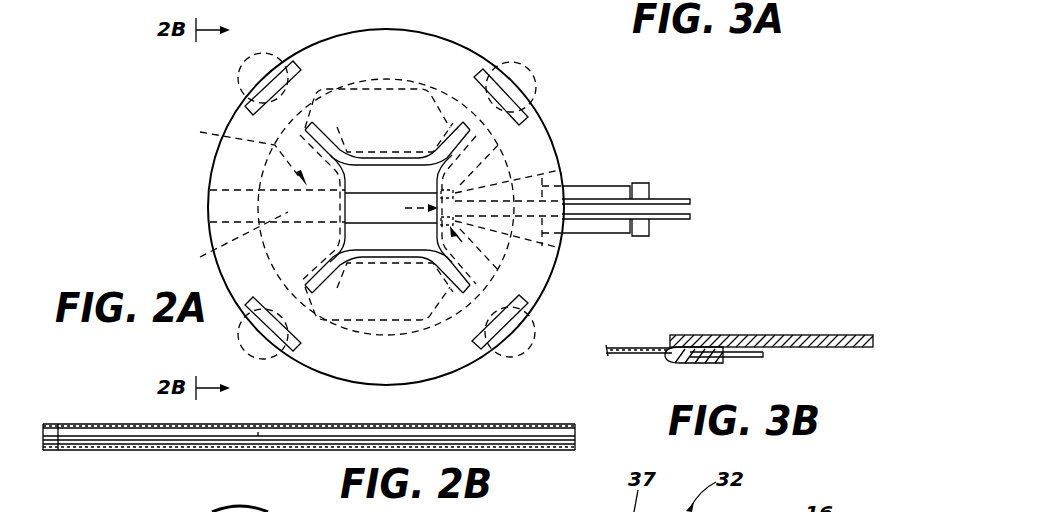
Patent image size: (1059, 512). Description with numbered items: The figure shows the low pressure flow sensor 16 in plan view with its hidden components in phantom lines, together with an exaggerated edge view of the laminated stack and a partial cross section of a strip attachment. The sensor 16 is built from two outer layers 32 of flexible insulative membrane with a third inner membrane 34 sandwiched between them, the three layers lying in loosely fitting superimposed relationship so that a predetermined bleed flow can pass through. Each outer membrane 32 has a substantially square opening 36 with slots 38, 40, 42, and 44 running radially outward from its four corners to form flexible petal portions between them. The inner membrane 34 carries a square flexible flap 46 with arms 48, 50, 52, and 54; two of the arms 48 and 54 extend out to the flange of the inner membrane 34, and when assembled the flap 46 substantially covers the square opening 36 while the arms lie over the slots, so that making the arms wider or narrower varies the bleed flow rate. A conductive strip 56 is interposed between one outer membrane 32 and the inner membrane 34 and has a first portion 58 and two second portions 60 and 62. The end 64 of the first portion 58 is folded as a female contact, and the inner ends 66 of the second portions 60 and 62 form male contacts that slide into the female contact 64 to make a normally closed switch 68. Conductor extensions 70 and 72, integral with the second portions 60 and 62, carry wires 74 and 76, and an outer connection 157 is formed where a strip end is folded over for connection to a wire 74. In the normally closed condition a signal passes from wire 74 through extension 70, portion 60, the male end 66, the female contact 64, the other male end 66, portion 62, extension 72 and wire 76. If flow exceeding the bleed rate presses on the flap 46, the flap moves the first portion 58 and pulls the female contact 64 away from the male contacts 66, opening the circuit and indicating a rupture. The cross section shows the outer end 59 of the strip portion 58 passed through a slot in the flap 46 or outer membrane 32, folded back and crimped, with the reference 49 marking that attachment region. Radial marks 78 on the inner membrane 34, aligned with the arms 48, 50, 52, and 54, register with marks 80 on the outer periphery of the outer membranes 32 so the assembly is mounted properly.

In FIG. 2A, the sensor 16 is at (586, 84).
In FIG. 2A, the outer membrane layers 32 is at (419, 24).
In FIG. 2B, the outer membrane layers 32 is at (117, 416).
In FIG. 2A, the inner membrane 34 is at (409, 100).
In FIG. 2B, the inner membrane 34 is at (126, 450).
In FIG. 2A, the square opening 36 is at (373, 262).
In FIG. 2A, the slot 38 is at (364, 177).
In FIG. 2A, the slot 40 is at (414, 177).
In FIG. 2A, the slot 42 is at (406, 237).
In FIG. 2A, the slot 44 is at (361, 237).
In FIG. 2A, the square flexible flap 46 is at (387, 162).
In FIG. 3B, the square flexible flap 46 is at (648, 345).
In FIG. 2A, the arm 48 is at (336, 145).
In FIG. 3B, the connection 49 is at (680, 345).
In FIG. 2A, the arm 50 is at (439, 135).
In FIG. 2A, the arm 52 is at (441, 293).
In FIG. 2A, the arm 54 is at (306, 270).
In FIG. 2A, the conductive strip 56 is at (341, 207).
In FIG. 2A, the first portion 58 is at (255, 228).
In FIG. 2B, the first portion 58 is at (290, 440).
In FIG. 3B, the first portion 58 is at (800, 335).
In FIG. 3B, the outer end 59 is at (700, 365).
In FIG. 2A, the second portion 60 is at (556, 152).
In FIG. 2A, the second portion 62 is at (557, 262).
In FIG. 2A, the female contact 64 is at (391, 208).
In FIG. 2A, the male contacts 66 is at (500, 207).
In FIG. 2A, the normally closed switch 68 is at (497, 282).
In FIG. 2A, the conductor extension 70 is at (602, 186).
In FIG. 2A, the conductor extension 72 is at (602, 233).
In FIG. 2A, the wire 74 is at (670, 199).
In FIG. 2A, the wire 76 is at (680, 222).
In FIG. 2A, the radial marks 78 is at (270, 54).
In FIG. 2A, the marks 80 is at (290, 82).
In FIG. 2A, the outer connection 157 is at (638, 183).